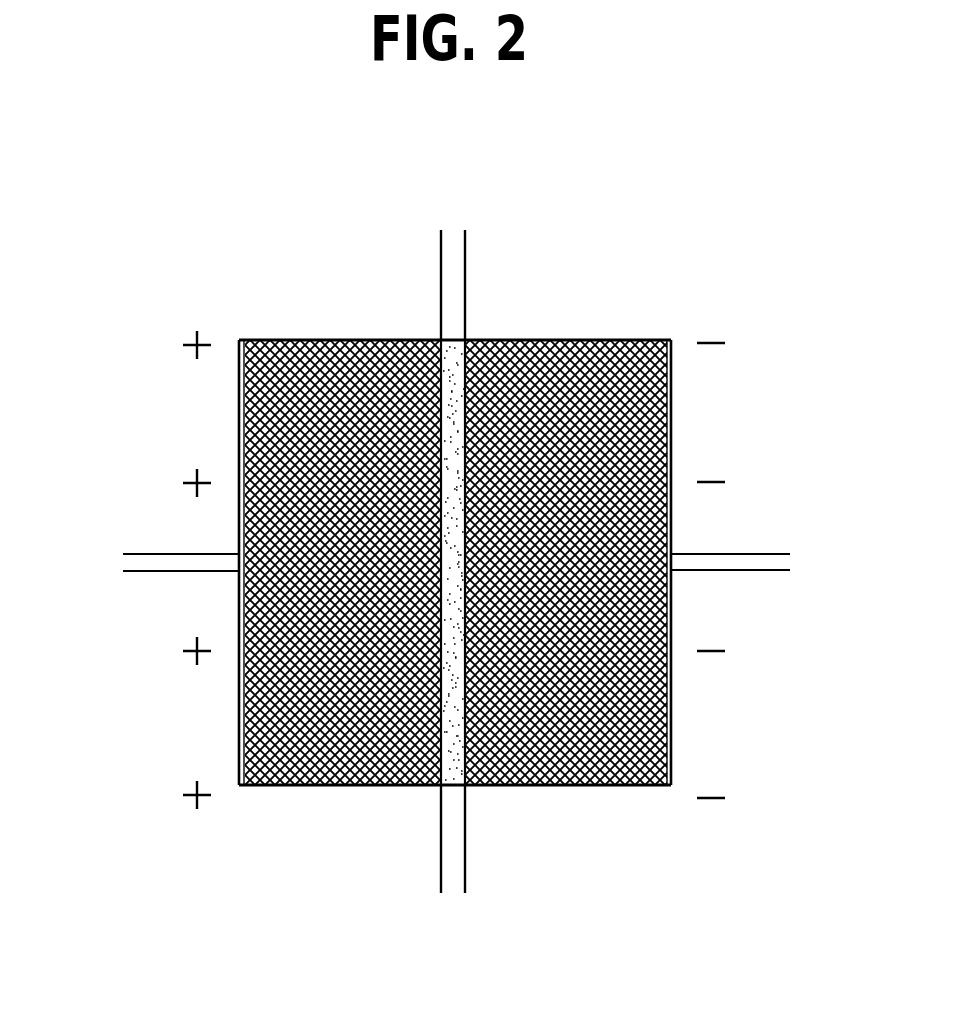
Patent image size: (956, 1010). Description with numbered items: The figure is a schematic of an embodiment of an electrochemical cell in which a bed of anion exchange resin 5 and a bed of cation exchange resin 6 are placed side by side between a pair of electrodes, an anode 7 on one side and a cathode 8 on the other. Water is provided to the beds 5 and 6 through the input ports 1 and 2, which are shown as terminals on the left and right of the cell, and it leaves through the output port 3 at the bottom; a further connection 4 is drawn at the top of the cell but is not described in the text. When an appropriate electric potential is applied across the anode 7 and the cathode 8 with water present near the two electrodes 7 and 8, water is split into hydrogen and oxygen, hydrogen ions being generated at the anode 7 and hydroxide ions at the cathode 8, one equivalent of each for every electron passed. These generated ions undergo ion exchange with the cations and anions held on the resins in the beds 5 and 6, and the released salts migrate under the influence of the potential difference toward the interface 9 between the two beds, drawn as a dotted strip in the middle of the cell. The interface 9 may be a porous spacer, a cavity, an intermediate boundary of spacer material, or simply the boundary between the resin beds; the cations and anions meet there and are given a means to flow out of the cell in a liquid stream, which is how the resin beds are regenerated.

The input port 1 is at (146, 563).
The input port 2 is at (764, 565).
The output port 3 is at (462, 880).
The fourth terminal 4 is at (458, 251).
The bed of anion exchange resin 5 is at (572, 339).
The bed of cation exchange resin 6 is at (338, 339).
The anode 7 is at (238, 383).
The cathode 8 is at (672, 392).
The interface 9 is at (468, 787).